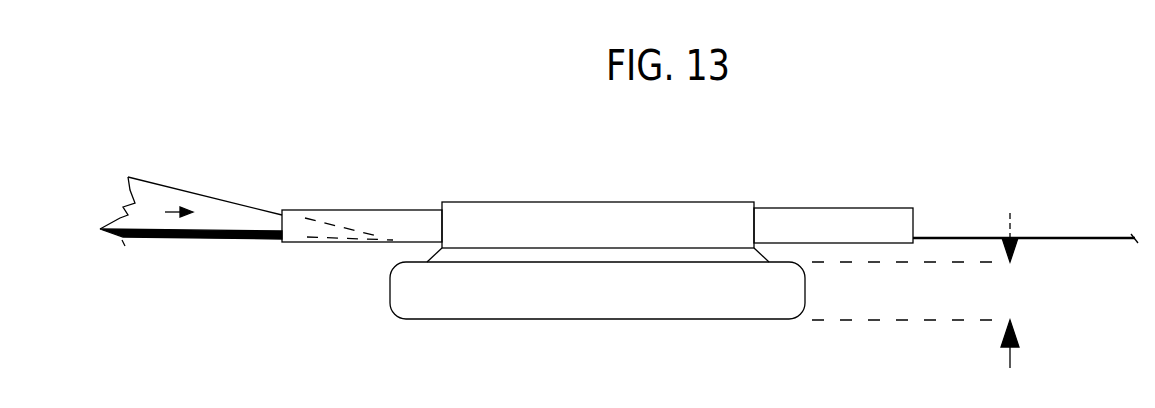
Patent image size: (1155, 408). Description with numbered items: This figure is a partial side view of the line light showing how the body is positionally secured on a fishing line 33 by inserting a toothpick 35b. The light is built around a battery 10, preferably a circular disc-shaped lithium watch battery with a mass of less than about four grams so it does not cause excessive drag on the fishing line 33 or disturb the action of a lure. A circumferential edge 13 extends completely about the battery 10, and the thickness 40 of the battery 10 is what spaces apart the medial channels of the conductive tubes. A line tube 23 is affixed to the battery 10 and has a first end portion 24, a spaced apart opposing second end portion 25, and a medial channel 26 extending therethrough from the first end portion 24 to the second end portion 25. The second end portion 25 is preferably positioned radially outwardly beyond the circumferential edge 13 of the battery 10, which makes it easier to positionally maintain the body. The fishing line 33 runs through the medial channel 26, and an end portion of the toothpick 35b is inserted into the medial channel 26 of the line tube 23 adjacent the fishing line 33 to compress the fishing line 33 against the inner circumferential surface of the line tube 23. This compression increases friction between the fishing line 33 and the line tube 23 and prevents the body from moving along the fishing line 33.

The battery 10 is at (576, 319).
The circumferential edge 13 is at (552, 285).
The line tube 23 is at (541, 203).
The first end portion 24 is at (295, 228).
The second end portion 25 is at (887, 222).
The medial channel 26 is at (397, 220).
The fishing line 33 is at (150, 239).
The toothpick 35b is at (151, 221).
The thickness 40 is at (1010, 285).